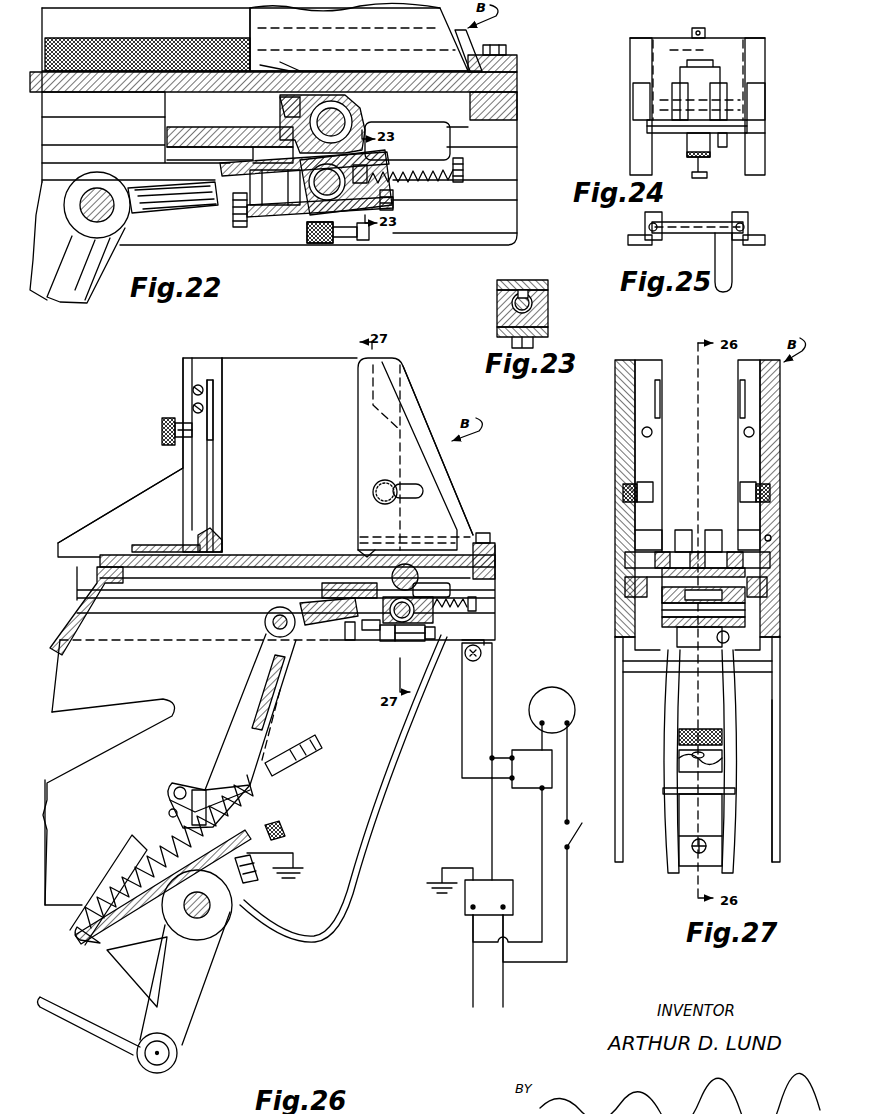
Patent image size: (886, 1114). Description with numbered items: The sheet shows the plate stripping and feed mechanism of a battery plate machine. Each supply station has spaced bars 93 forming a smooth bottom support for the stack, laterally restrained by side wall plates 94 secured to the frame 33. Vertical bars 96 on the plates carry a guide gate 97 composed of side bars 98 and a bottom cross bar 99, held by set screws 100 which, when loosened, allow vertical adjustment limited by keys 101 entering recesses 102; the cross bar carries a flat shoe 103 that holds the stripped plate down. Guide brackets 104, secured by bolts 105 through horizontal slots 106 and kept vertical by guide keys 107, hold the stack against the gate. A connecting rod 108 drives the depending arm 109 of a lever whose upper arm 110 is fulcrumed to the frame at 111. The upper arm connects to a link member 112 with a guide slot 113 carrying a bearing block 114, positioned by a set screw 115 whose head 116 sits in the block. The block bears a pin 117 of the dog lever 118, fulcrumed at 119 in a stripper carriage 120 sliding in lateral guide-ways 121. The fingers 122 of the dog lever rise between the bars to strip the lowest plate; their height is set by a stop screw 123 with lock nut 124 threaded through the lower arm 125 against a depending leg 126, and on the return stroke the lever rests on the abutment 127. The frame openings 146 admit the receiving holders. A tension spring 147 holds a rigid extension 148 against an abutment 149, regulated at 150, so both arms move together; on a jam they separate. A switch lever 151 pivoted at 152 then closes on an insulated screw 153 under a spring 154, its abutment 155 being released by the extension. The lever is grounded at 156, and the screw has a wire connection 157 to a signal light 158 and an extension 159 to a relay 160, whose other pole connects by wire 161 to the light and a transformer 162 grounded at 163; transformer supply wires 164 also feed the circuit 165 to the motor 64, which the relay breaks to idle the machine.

In FIG. 22, the frame 33 is at (43, 300).
In FIG. 26, the frame 33 is at (87, 773).
In FIG. 27, the frame 33 is at (772, 817).
In FIG. 26, the motor 64 is at (552, 690).
In FIG. 22, the spaced bars 93 is at (517, 85).
In FIG. 26, the spaced bars 93 is at (496, 560).
In FIG. 27, the spaced bars 93 is at (770, 558).
In FIG. 22, the side wall plates 94 is at (466, 48).
In FIG. 26, the side wall plates 94 is at (292, 370).
In FIG. 27, the side wall plates 94 is at (620, 437).
In FIG. 26, the vertical bars 96 is at (202, 362).
In FIG. 26, the guide gate 97 is at (224, 365).
In FIG. 26, the side bars 98 is at (220, 478).
In FIG. 26, the bottom cross bar 99 is at (221, 543).
In FIG. 26, the set screws 100 is at (192, 437).
In FIG. 26, the keys 101 is at (193, 397).
In FIG. 26, the recesses 102 is at (215, 418).
In FIG. 26, the flat shoe 103 is at (170, 547).
In FIG. 22, the guide brackets 104 is at (258, 39).
In FIG. 26, the guide brackets 104 is at (393, 410).
In FIG. 27, the guide brackets 104 is at (747, 445).
In FIG. 26, the bolts 105 is at (397, 487).
In FIG. 27, the bolts 105 is at (740, 489).
In FIG. 26, the horizontal slots 106 is at (423, 488).
In FIG. 22, the guide keys 107 is at (505, 48).
In FIG. 26, the guide keys 107 is at (474, 537).
In FIG. 27, the guide keys 107 is at (770, 538).
In FIG. 26, the connecting rod 108 is at (93, 1023).
In FIG. 26, the depending arm 109 is at (188, 987).
In FIG. 22, the upper arm 110 is at (75, 283).
In FIG. 26, the upper arm 110 is at (250, 688).
In FIG. 27, the upper arm 110 is at (724, 770).
In FIG. 26, the fulcrum 111 is at (207, 920).
In FIG. 22, the link member 112 is at (180, 197).
In FIG. 24, the link member 112 is at (693, 150).
In FIG. 23, the link member 112 is at (497, 284).
In FIG. 26, the link member 112 is at (318, 625).
In FIG. 27, the link member 112 is at (680, 655).
In FIG. 22, the longitudinal guide slot 113 is at (223, 218).
In FIG. 23, the longitudinal guide slot 113 is at (548, 331).
In FIG. 26, the longitudinal guide slot 113 is at (349, 642).
In FIG. 22, the bearing block 114 is at (265, 200).
In FIG. 23, the bearing block 114 is at (548, 318).
In FIG. 26, the bearing block 114 is at (415, 645).
In FIG. 27, the bearing block 114 is at (737, 625).
In FIG. 22, the set screw 115 is at (465, 172).
In FIG. 24, the set screw 115 is at (701, 178).
In FIG. 23, the set screw 115 is at (514, 305).
In FIG. 26, the set screw 115 is at (478, 605).
In FIG. 22, the head 116 is at (397, 192).
In FIG. 23, the head 116 is at (530, 302).
In FIG. 22, the pin 117 is at (325, 217).
In FIG. 27, the pin 117 is at (745, 612).
In FIG. 22, the dog lever 118 is at (360, 122).
In FIG. 24, the dog lever 118 is at (752, 123).
In FIG. 26, the dog lever 118 is at (385, 640).
In FIG. 27, the dog lever 118 is at (745, 596).
In FIG. 22, the fulcrum 119 is at (338, 114).
In FIG. 26, the fulcrum 119 is at (413, 580).
In FIG. 27, the fulcrum 119 is at (745, 575).
In FIG. 22, the stripper carriage 120 is at (200, 133).
In FIG. 24, the stripper carriage 120 is at (757, 147).
In FIG. 25, the stripper carriage 120 is at (765, 243).
In FIG. 26, the stripper carriage 120 is at (450, 589).
In FIG. 27, the stripper carriage 120 is at (633, 595).
In FIG. 22, the lateral guide-ways 121 is at (133, 152).
In FIG. 26, the lateral guide-ways 121 is at (349, 590).
In FIG. 27, the lateral guide-ways 121 is at (625, 588).
In FIG. 22, the fingers 122 is at (282, 64).
In FIG. 24, the fingers 122 is at (758, 86).
In FIG. 26, the fingers 122 is at (362, 550).
In FIG. 27, the fingers 122 is at (713, 560).
In FIG. 22, the stop screw 123 is at (366, 237).
In FIG. 24, the stop screw 123 is at (722, 147).
In FIG. 26, the stop screw 123 is at (414, 650).
In FIG. 22, the lock nut 124 is at (337, 245).
In FIG. 26, the lock nut 124 is at (400, 660).
In FIG. 22, the lower arm 125 is at (310, 240).
In FIG. 22, the depending leg 126 is at (283, 227).
In FIG. 25, the depending leg 126 is at (725, 279).
In FIG. 26, the depending leg 126 is at (375, 632).
In FIG. 22, the abutment 127 is at (282, 120).
In FIG. 26, the frame openings 146 is at (60, 665).
In FIG. 26, the tension spring 147 is at (257, 795).
In FIG. 26, the rigid extension 148 is at (130, 847).
In FIG. 26, the abutment 149 is at (173, 813).
In FIG. 26, the tension regulator 150 is at (305, 753).
In FIG. 26, the switch lever 151 is at (198, 790).
In FIG. 27, the switch lever 151 is at (711, 848).
In FIG. 26, the pivot 152 is at (203, 763).
In FIG. 27, the pivot 152 is at (735, 794).
In FIG. 26, the insulated screw 153 is at (245, 868).
In FIG. 26, the spring 154 is at (273, 833).
In FIG. 26, the abutment 155 is at (180, 823).
In FIG. 26, the ground 156 is at (297, 869).
In FIG. 26, the wire connection 157 is at (353, 897).
In FIG. 26, the signal light 158 is at (482, 652).
In FIG. 26, the extension 159 is at (463, 778).
In FIG. 26, the relay 160 is at (530, 790).
In FIG. 26, the wire 161 is at (508, 757).
In FIG. 26, the transformer 162 is at (505, 887).
In FIG. 26, the ground 163 is at (440, 880).
In FIG. 26, the transformer supply wires 164 is at (503, 998).
In FIG. 26, the motor circuit 165 is at (568, 903).